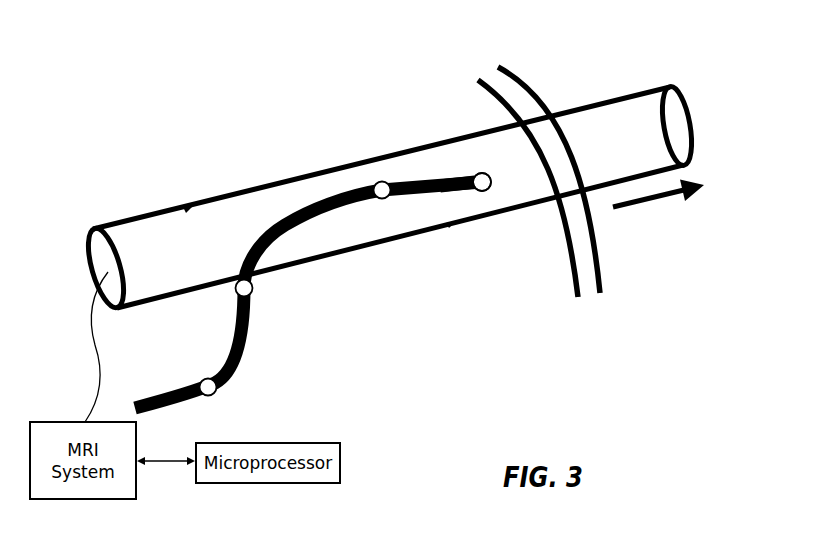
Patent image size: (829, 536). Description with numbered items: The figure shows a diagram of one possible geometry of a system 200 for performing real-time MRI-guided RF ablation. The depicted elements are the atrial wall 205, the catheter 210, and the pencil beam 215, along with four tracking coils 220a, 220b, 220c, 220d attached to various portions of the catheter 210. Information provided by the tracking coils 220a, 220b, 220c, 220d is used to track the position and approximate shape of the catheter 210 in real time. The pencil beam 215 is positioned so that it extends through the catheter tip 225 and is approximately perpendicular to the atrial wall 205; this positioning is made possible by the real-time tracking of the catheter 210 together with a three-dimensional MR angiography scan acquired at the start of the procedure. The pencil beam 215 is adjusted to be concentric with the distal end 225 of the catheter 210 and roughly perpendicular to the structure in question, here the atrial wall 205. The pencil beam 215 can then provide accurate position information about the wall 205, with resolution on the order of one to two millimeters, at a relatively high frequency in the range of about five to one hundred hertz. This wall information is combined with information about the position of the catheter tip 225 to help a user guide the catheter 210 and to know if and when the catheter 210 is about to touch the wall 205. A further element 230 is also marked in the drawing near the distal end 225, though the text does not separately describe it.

The system 200 is at (400, 214).
The atrial wall 205 is at (587, 285).
The catheter 210 is at (432, 178).
The pencil beam 215 is at (603, 133).
The tracking coil 220a is at (217, 393).
The tracking coil 220b is at (238, 303).
The tracking coil 220c is at (382, 200).
The tracking coil 220d is at (484, 192).
The catheter tip 225 is at (458, 173).
The distal tip marker 230 is at (487, 173).